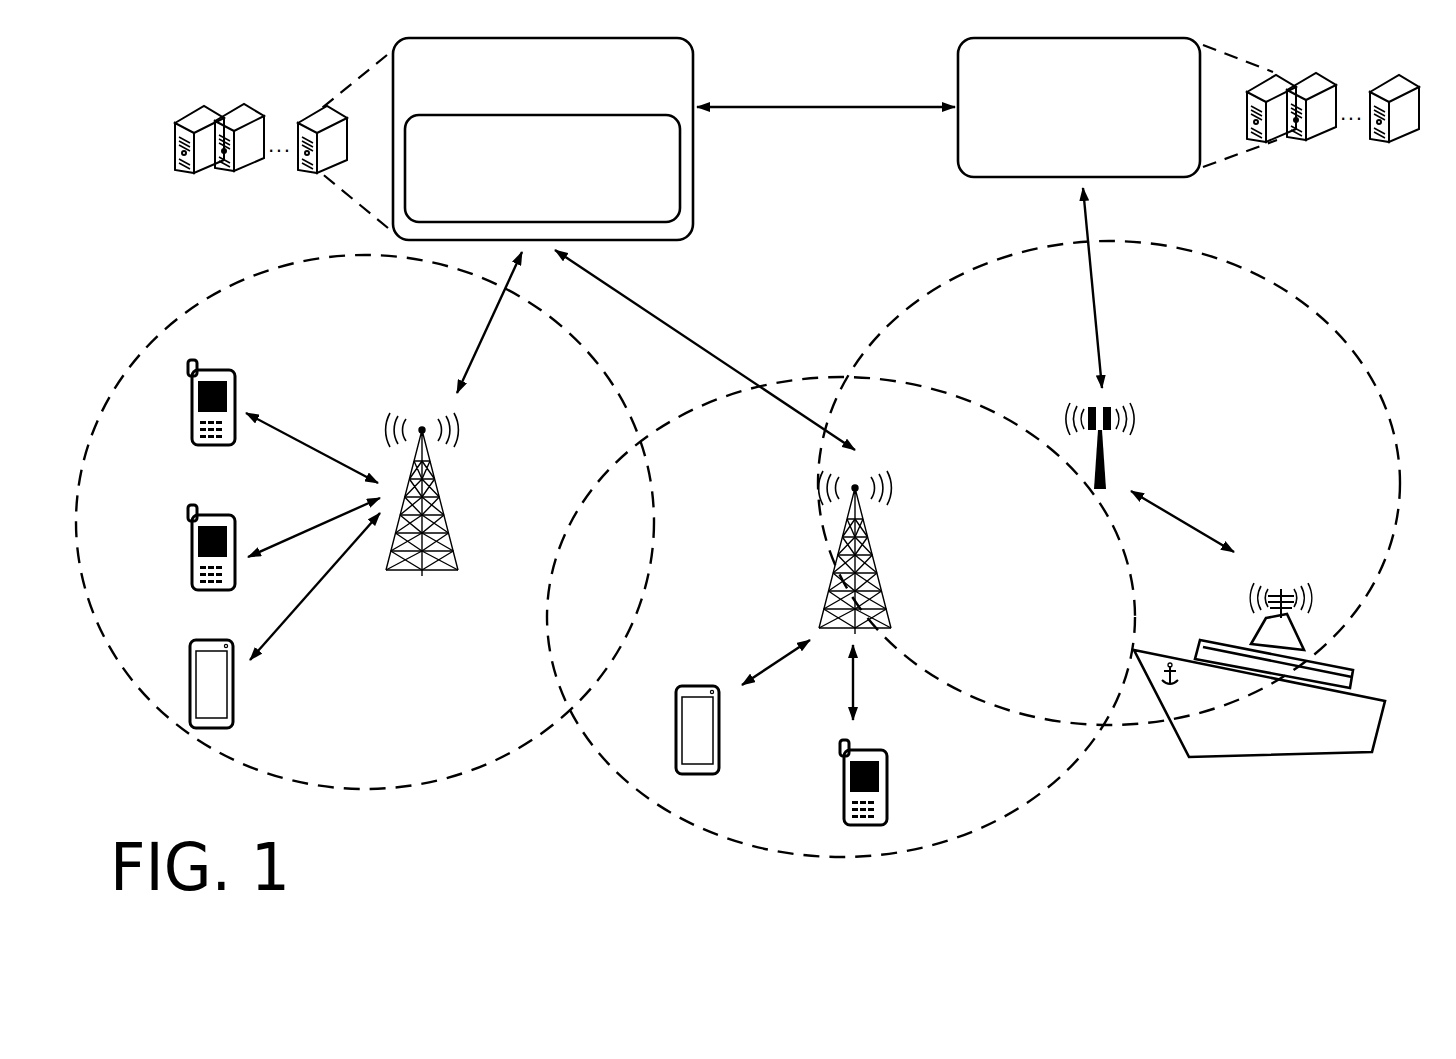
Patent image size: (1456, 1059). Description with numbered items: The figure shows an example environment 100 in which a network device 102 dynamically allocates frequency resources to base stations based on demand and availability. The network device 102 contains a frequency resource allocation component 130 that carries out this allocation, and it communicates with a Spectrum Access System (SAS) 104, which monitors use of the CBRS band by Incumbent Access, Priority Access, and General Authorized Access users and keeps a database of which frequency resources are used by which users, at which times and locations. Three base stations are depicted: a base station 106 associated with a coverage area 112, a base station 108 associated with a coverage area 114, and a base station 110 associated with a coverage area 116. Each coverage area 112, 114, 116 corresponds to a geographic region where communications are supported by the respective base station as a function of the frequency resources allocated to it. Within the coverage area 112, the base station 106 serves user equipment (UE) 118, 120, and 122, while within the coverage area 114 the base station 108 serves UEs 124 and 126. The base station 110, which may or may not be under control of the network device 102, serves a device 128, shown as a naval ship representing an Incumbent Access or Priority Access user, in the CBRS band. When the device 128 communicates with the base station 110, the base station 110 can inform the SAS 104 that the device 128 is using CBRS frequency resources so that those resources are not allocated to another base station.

The environment 100 is at (185, 66).
The network device 102 is at (543, 139).
The Spectrum Access System (SAS) 104 is at (1079, 107).
The base station 106 is at (448, 532).
The base station 108 is at (830, 600).
The base station 110 is at (1104, 480).
The coverage area 112 is at (405, 787).
The coverage area 114 is at (640, 795).
The coverage area 116 is at (1286, 286).
The user equipment (UE) 118 is at (188, 366).
The user equipment (UE) 120 is at (188, 553).
The user equipment (UE) 122 is at (190, 690).
The user equipment (UE) 124 is at (719, 724).
The user equipment (UE) 126 is at (890, 818).
The device 128 is at (1225, 757).
The frequency resource allocation component 130 is at (542, 168).